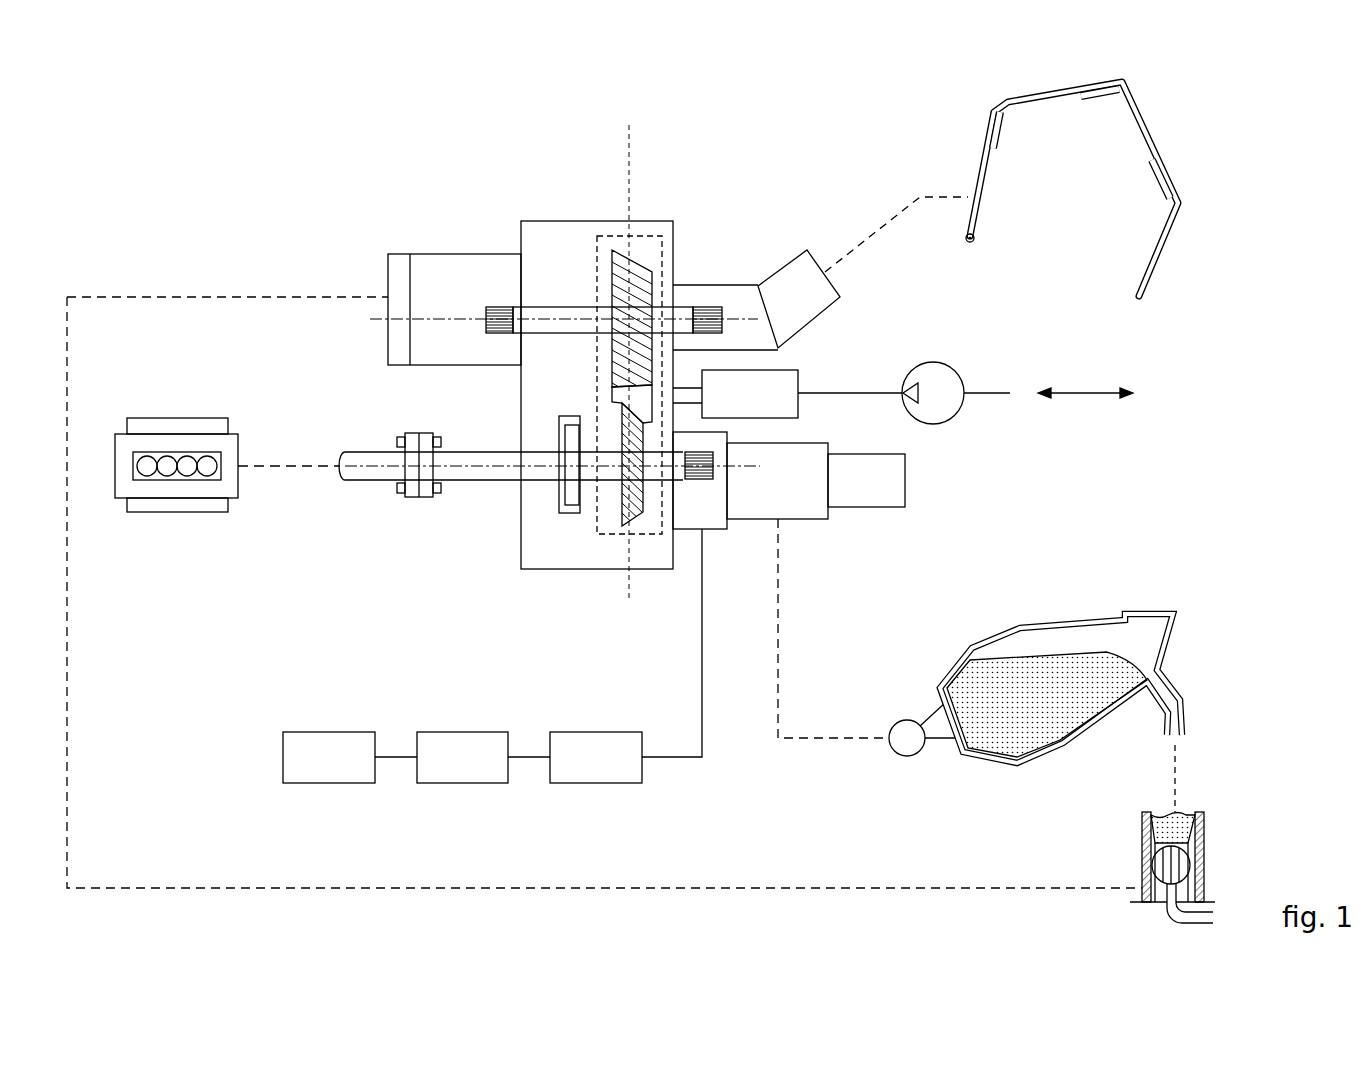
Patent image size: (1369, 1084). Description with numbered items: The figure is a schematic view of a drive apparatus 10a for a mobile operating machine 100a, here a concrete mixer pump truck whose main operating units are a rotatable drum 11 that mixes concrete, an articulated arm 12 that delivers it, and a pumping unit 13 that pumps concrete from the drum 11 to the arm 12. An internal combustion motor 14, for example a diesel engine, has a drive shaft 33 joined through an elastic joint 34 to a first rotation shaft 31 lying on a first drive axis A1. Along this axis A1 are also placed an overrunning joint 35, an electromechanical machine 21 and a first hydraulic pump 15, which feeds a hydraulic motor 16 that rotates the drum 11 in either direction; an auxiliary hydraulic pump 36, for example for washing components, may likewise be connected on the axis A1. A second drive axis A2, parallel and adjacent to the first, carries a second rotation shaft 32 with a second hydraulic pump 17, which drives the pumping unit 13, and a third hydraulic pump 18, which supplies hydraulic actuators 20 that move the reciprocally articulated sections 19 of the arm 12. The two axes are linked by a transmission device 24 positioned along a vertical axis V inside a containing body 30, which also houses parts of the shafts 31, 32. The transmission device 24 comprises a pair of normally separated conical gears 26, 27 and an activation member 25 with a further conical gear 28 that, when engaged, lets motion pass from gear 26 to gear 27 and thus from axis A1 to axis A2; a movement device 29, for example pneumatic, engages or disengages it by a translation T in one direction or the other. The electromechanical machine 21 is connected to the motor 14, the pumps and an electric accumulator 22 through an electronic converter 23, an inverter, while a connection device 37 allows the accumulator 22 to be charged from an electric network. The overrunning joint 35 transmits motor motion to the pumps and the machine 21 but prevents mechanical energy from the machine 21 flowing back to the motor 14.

The drive apparatus 10a is at (326, 184).
The mobile operating machine 100a is at (1246, 423).
The rotatable drum 11 is at (1065, 626).
The articulated arm 12 is at (1156, 124).
The pumping unit 13 is at (1208, 842).
The internal combustion motor 14 is at (167, 425).
The first hydraulic pump 15 is at (797, 494).
The hydraulic motor 16 is at (910, 738).
The second hydraulic pump 17 is at (437, 272).
The third hydraulic pump 18 is at (785, 288).
The articulated sections 19 is at (1035, 99).
The hydraulic actuators 20 is at (1080, 101).
The electromechanical machine 21 is at (698, 518).
The electric accumulator 22 is at (483, 765).
The electronic converter 23 is at (596, 765).
The transmission device 24 is at (611, 228).
The activation member 25 is at (810, 366).
The conical gear 26 is at (637, 511).
The conical gear 27 is at (641, 272).
The conical gear 28 is at (620, 393).
The movement device 29 is at (943, 381).
The containing body 30 is at (551, 221).
The first rotation shaft 31 is at (505, 473).
The second rotation shaft 32 is at (551, 315).
The drive shaft 33 is at (357, 461).
The elastic joint 34 is at (424, 488).
The overrunning joint 35 is at (571, 504).
The auxiliary hydraulic pump 36 is at (871, 485).
The connection device 37 is at (346, 765).
The first drive axis A1 is at (376, 468).
The second drive axis A2 is at (450, 320).
The vertical axis V is at (633, 137).
The translation T is at (1081, 392).